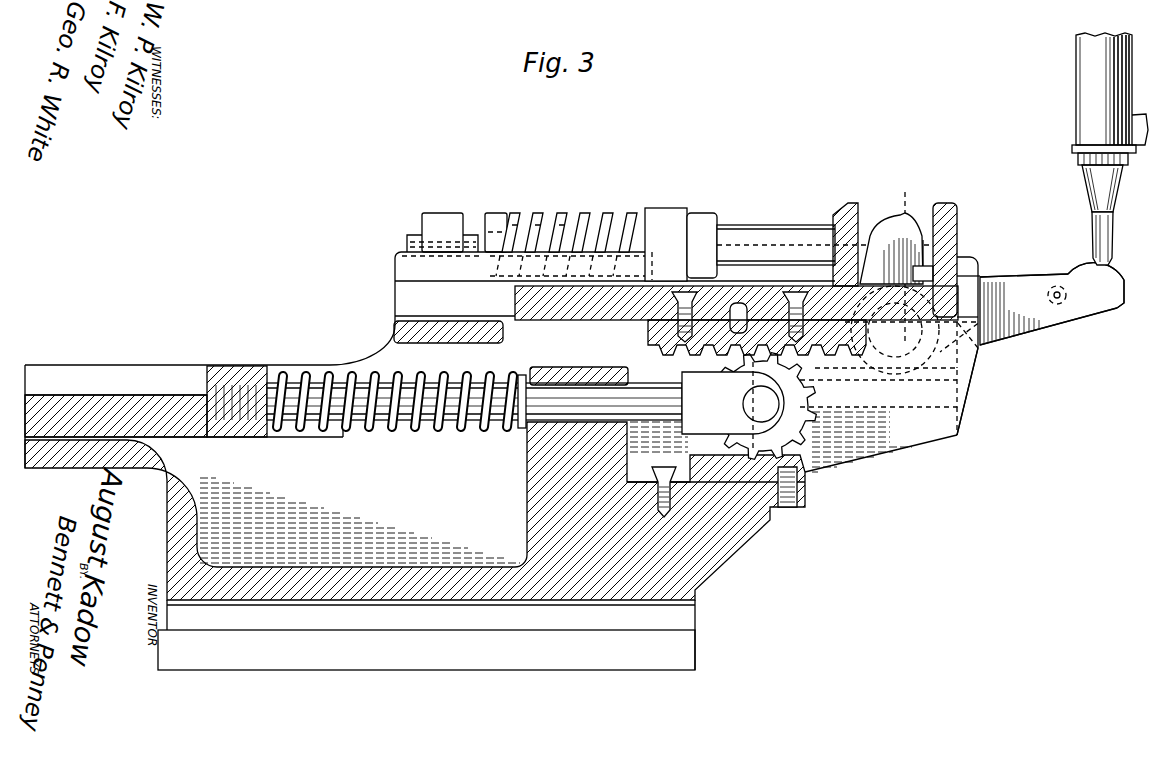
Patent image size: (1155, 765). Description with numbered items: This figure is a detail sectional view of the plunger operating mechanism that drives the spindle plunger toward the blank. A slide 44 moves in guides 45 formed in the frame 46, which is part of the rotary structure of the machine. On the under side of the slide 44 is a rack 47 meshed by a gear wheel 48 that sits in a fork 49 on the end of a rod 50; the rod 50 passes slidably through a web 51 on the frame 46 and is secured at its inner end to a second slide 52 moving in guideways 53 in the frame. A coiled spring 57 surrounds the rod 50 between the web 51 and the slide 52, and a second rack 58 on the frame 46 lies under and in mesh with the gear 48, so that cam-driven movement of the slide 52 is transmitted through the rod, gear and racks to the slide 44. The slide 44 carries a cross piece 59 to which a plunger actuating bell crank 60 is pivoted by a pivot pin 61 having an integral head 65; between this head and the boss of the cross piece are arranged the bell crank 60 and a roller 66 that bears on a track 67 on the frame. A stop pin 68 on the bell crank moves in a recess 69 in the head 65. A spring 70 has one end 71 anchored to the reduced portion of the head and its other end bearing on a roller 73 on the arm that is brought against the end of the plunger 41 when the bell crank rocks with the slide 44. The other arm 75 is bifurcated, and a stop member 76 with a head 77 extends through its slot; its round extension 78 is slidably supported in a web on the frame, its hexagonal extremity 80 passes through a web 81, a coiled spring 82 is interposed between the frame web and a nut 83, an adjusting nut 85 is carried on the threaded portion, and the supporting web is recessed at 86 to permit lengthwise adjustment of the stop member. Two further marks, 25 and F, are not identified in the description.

The cylinder 25 is at (1077, 68).
The plunger 41 is at (1113, 252).
The slide 44 is at (605, 300).
The guides 45 is at (982, 277).
The frame 46 is at (1000, 283).
The rack 47 is at (648, 332).
The gear wheel 48 is at (783, 406).
The fork 49 is at (733, 405).
The rod 50 is at (428, 420).
The web 51 is at (528, 480).
The slide 52 is at (168, 408).
The guideways 53 is at (270, 430).
The coiled spring 57 is at (343, 427).
The rack 58 is at (806, 478).
The cross piece 59 is at (943, 204).
The bell crank 60 is at (1123, 292).
The pivot pin 61 is at (972, 378).
The head 65 is at (985, 349).
The roller 66 is at (957, 256).
The track 67 is at (968, 408).
The stop pin 68 is at (915, 273).
The recess 69 is at (963, 280).
The spring 70 is at (1060, 285).
The end 71 is at (878, 364).
The roller 73 is at (1063, 318).
The arm 75 is at (890, 218).
The stop member 76 is at (785, 225).
The head 77 is at (925, 240).
The extension 78 is at (568, 230).
The extremity 80 is at (410, 236).
The web 81 is at (441, 214).
The coiled spring 82 is at (536, 214).
The nut 83 is at (497, 213).
The adjusting nut 85 is at (702, 213).
The recess 86 is at (672, 212).
The lever F is at (1118, 262).